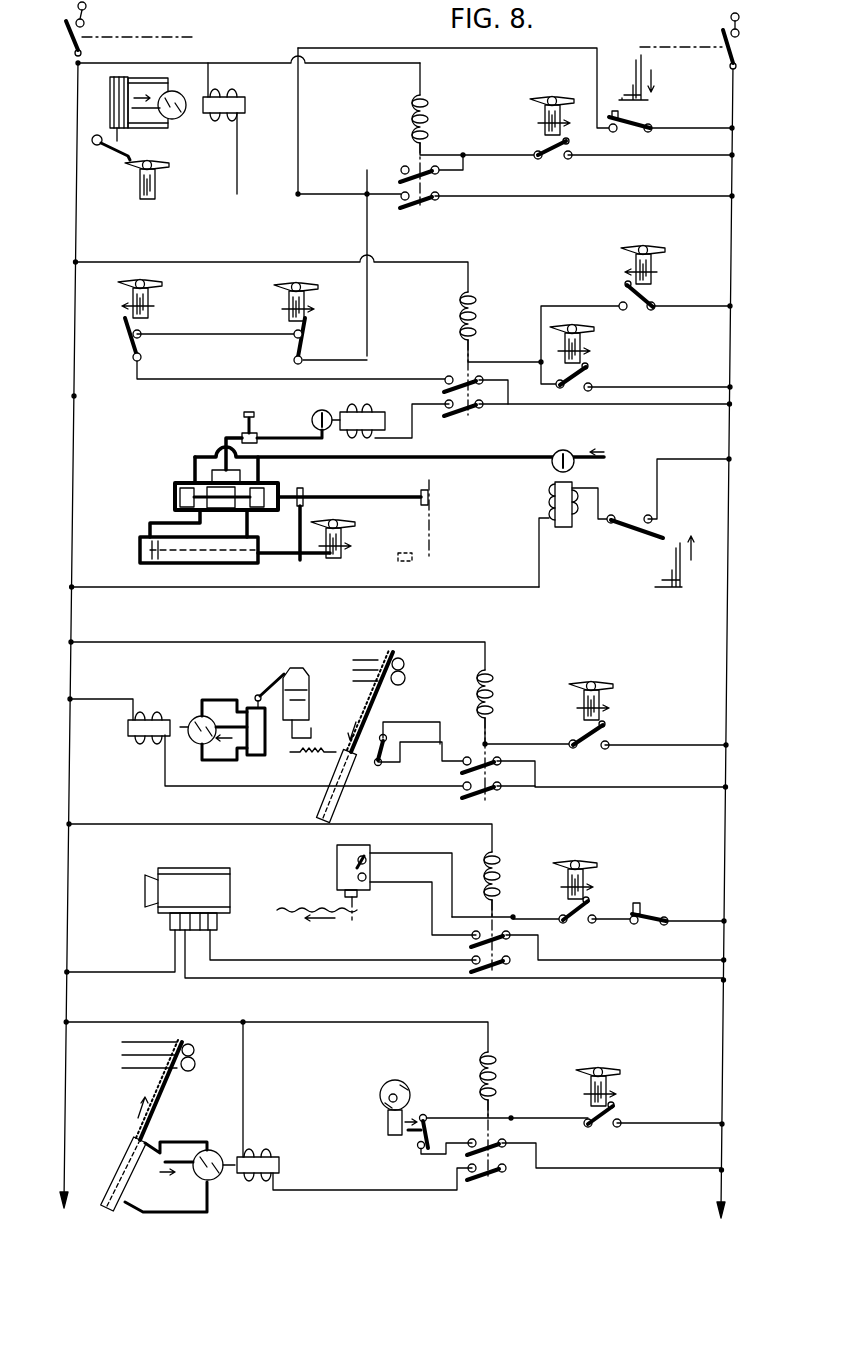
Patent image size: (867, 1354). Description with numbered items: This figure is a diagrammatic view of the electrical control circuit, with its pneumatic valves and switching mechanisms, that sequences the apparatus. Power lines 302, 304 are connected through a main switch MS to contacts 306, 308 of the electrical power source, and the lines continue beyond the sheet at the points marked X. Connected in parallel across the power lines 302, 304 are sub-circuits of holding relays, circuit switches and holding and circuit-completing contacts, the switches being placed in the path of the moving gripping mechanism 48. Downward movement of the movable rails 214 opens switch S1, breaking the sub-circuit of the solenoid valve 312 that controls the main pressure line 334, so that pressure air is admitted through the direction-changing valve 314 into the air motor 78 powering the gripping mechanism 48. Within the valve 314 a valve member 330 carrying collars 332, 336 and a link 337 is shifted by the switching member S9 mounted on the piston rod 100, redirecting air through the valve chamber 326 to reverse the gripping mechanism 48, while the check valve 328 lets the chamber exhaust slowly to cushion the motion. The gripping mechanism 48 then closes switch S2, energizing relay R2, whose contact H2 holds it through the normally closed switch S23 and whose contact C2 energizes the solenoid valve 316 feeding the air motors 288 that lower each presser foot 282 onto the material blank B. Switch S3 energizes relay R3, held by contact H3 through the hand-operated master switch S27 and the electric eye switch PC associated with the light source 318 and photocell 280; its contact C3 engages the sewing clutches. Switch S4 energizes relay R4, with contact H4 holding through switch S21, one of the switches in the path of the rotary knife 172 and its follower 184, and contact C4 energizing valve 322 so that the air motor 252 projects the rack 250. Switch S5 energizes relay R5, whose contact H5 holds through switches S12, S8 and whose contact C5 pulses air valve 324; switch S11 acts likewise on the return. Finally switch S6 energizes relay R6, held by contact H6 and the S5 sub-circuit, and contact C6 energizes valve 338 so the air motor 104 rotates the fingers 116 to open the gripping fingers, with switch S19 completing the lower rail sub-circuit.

The power line 302 is at (68, 770).
The power line 304 is at (730, 674).
The contact of electrical power source 306 is at (86, 18).
The contact of electrical power source 308 is at (740, 25).
The main switch MS is at (64, 33).
The line continuation marker X is at (387, 1205).
The air motor 104 is at (114, 105).
The fingers 116 is at (113, 152).
The solenoid-operated air valve 338 is at (206, 123).
The gripping mechanism 48 is at (140, 200).
The relay R6 is at (411, 119).
The relay holding contact H6 is at (400, 165).
The relay contact C6 is at (432, 203).
The switch S6 is at (555, 162).
The switch S19 is at (627, 135).
The movable rails 214 is at (646, 99).
The switch S12 is at (142, 347).
The switch S8 is at (294, 347).
The relay R5 is at (460, 320).
The switch S11 is at (618, 301).
The switch S5 is at (594, 382).
The relay holding contact H5 is at (447, 378).
The relay contact C5 is at (463, 412).
The solenoid-operated air valve 324 is at (336, 411).
The check valve 328 is at (241, 433).
The direction-changing valve 314 is at (171, 475).
The collar 336 is at (183, 500).
The valve chamber 326 is at (243, 510).
The main pressure line 334 is at (496, 466).
The solenoid valve 312 is at (553, 470).
The switch S1 is at (634, 532).
The air motor 78 is at (205, 566).
The air motor piston rod 100 is at (290, 556).
The link bar 337 is at (297, 489).
The valve member 330 is at (329, 495).
The collar 332 is at (420, 488).
The switching member S9 is at (301, 562).
The solenoid operated valve 316 is at (196, 718).
The air motor 288 is at (256, 757).
The presser foot 282 is at (318, 703).
The material blank B is at (318, 755).
The rack 250 is at (380, 692).
The air motor 252 is at (323, 802).
The switch S23 is at (389, 757).
The relay R2 is at (478, 700).
The switch S2 is at (614, 737).
The relay contact H2 is at (462, 766).
The relay contact C2 is at (481, 795).
The relay R3 is at (500, 866).
The switch S3 is at (573, 928).
The master switch S27 is at (648, 914).
The relay contact H3 is at (470, 940).
The relay contact C3 is at (484, 968).
The camera 280 is at (395, 923).
The electric eye switch PC is at (372, 860).
The light source 318 is at (337, 880).
The relay R4 is at (500, 1070).
The switch S4 is at (603, 1130).
The relay contact H4 is at (506, 1147).
The relay contact C4 is at (506, 1176).
The solenoid-operated valve 322 is at (222, 1150).
The rotary knife 172 is at (383, 1086).
The cam follower 184 is at (388, 1130).
The switch S21 is at (411, 1138).